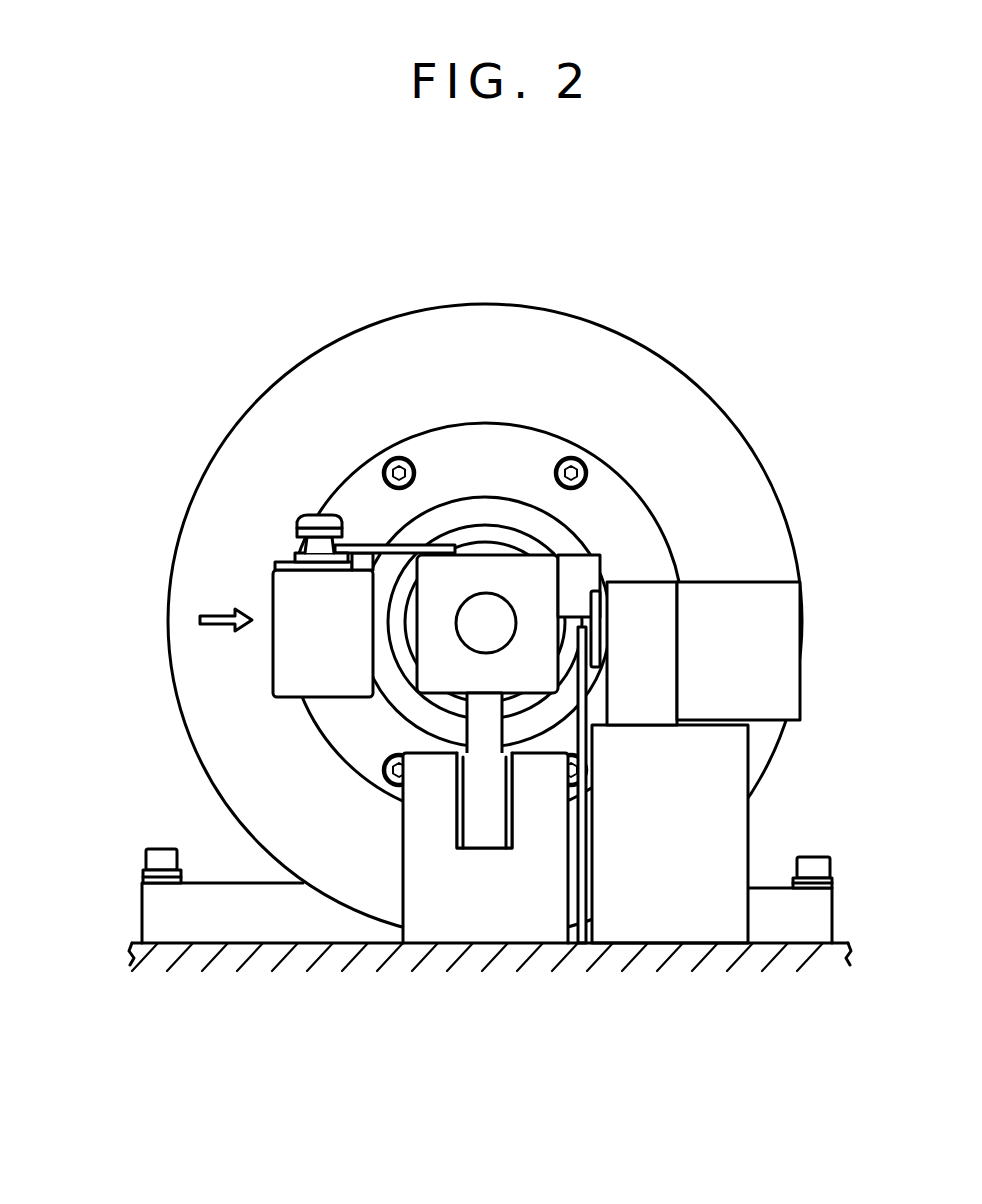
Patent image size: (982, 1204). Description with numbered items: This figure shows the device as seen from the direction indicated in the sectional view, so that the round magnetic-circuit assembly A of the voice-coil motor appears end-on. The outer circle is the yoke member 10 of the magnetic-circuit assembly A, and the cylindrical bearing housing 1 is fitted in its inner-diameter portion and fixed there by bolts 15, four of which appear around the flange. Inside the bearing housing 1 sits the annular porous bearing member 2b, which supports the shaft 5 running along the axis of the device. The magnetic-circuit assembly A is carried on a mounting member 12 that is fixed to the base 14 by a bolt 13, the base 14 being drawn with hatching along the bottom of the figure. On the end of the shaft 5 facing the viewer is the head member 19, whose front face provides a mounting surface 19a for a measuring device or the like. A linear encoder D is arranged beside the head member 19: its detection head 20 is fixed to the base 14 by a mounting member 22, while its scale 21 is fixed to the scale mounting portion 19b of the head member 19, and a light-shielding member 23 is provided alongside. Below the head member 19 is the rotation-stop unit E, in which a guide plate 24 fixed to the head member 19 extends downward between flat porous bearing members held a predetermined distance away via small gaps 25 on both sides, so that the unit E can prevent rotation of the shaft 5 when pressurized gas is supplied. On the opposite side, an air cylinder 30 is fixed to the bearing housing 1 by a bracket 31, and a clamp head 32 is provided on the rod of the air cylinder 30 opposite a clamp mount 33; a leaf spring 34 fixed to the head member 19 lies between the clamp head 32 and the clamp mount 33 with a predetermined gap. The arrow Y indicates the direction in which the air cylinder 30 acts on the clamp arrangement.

The bearing housing 1 is at (515, 437).
The porous bearing member 2b is at (507, 535).
The shaft 5 is at (487, 553).
The yoke member 10 is at (578, 337).
The mounting member 12 is at (153, 905).
The bolt 13 is at (157, 848).
The base 14 is at (760, 960).
The bolt 15 is at (392, 453).
The head member 19 is at (433, 687).
The mounting surface 19a is at (548, 686).
The scale mounting portion 19b is at (590, 565).
The detection head 20 is at (790, 633).
The scale 21 is at (598, 610).
The mounting member 22 is at (732, 770).
The light-shielding member 23 is at (600, 722).
The guide plate 24 is at (483, 837).
The small gap 25 is at (462, 855).
The air cylinder 30 is at (282, 668).
The bracket 31 is at (270, 565).
The clamp head 32 is at (307, 515).
The clamp mount 33 is at (297, 547).
The leaf spring 34 is at (317, 518).
The magnetic-circuit assembly A is at (555, 300).
The linear encoder D is at (710, 577).
The rotation-stop unit E is at (393, 908).
The direction Y is at (226, 607).